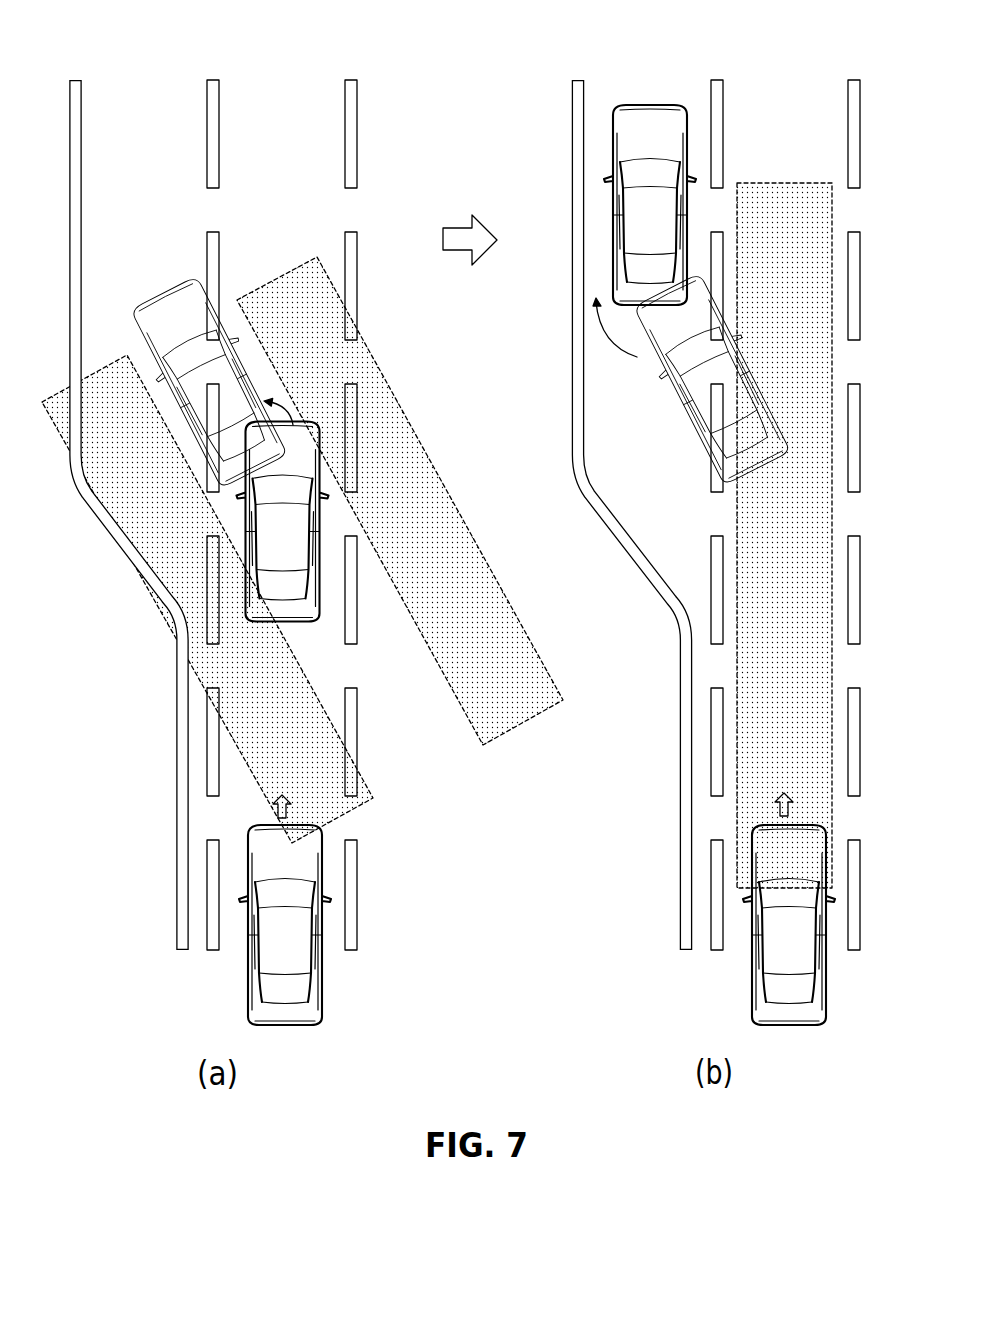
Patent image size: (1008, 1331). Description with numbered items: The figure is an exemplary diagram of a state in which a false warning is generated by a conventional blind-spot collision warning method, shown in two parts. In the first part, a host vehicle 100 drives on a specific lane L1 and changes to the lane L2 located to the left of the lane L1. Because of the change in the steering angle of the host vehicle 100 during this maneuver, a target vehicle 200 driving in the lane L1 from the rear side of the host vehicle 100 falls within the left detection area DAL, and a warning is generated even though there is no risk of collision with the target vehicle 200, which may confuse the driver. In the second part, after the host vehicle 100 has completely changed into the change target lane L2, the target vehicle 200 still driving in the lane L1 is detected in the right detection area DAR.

The host vehicle 100 is at (297, 585).
The target vehicle 200 is at (300, 958).
The lane L1 is at (292, 105).
The lane L2 is at (134, 107).
The right detection area DAR is at (518, 710).
The left detection area DAL is at (210, 668).